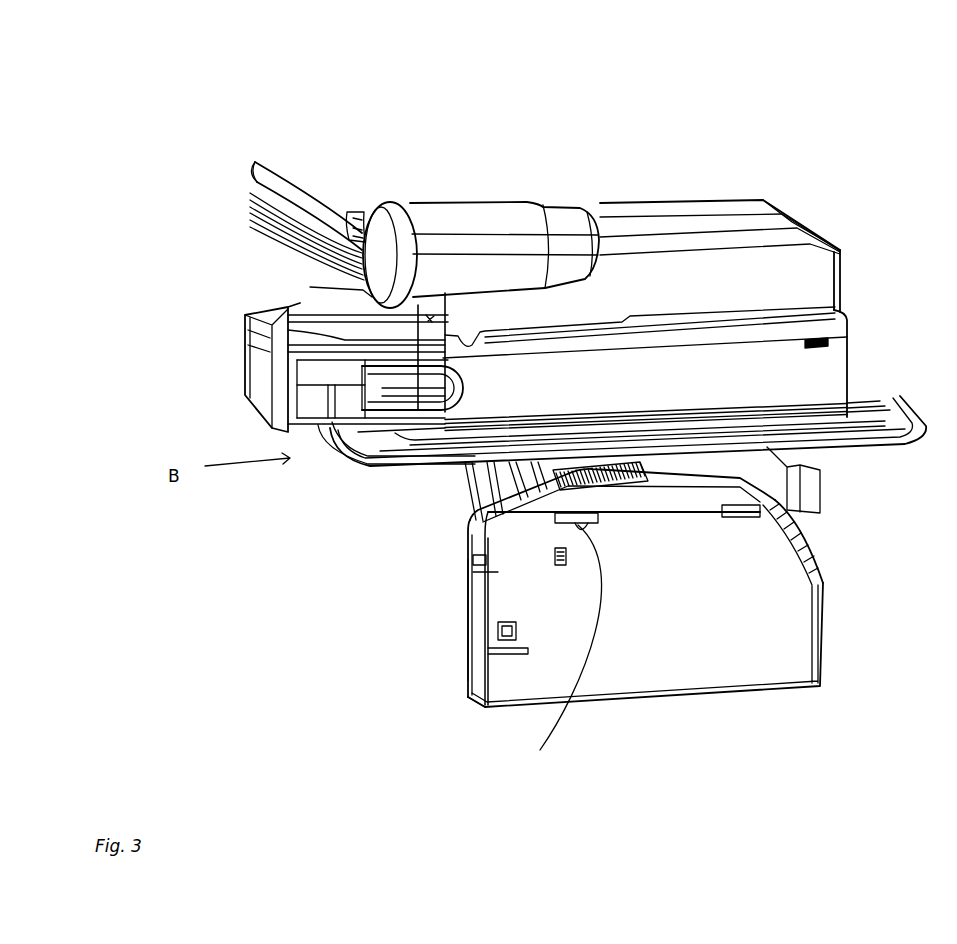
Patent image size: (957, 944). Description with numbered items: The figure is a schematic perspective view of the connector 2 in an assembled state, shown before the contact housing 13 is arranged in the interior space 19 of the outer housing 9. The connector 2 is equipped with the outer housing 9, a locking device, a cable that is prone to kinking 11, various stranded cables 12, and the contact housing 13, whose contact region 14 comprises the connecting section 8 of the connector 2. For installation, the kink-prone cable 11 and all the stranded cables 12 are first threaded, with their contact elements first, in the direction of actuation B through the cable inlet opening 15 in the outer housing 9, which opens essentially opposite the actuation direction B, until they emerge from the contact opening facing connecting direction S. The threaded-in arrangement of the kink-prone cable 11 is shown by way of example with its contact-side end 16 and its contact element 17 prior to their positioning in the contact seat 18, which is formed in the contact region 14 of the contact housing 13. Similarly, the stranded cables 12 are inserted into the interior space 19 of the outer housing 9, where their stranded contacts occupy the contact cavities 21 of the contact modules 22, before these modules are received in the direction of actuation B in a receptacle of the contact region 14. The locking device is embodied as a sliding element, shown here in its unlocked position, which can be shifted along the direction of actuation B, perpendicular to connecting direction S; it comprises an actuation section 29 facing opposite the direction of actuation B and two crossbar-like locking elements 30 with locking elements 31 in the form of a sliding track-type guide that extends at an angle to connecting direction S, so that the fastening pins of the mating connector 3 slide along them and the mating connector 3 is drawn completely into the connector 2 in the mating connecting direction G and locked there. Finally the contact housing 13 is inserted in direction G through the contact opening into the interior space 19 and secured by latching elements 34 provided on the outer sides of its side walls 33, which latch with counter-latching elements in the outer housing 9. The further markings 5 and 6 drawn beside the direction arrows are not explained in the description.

The connector 2 is at (812, 130).
The mating connector 3 is at (280, 328).
The direction 5 is at (72, 482).
The direction 6 is at (88, 490).
The connecting section 8 is at (828, 673).
The outer housing 9 is at (817, 257).
The cable that is prone to kinking 11 is at (278, 172).
The stranded cables 12 is at (246, 194).
The contact housing 13 is at (473, 493).
The contact region 14 is at (860, 675).
The cable inlet opening 15 is at (368, 205).
The contact-side end 16 is at (833, 463).
The contact element 17 is at (803, 497).
The contact seat 18 is at (803, 538).
The interior space 19 is at (310, 287).
The contact cavities 21 is at (476, 707).
The contact modules 22 is at (466, 670).
The actuation section 29 is at (241, 375).
The crossbar-like locking elements 30 is at (335, 330).
The locking elements 31 is at (388, 382).
The side walls 33 is at (468, 587).
The latching elements 34 is at (555, 648).